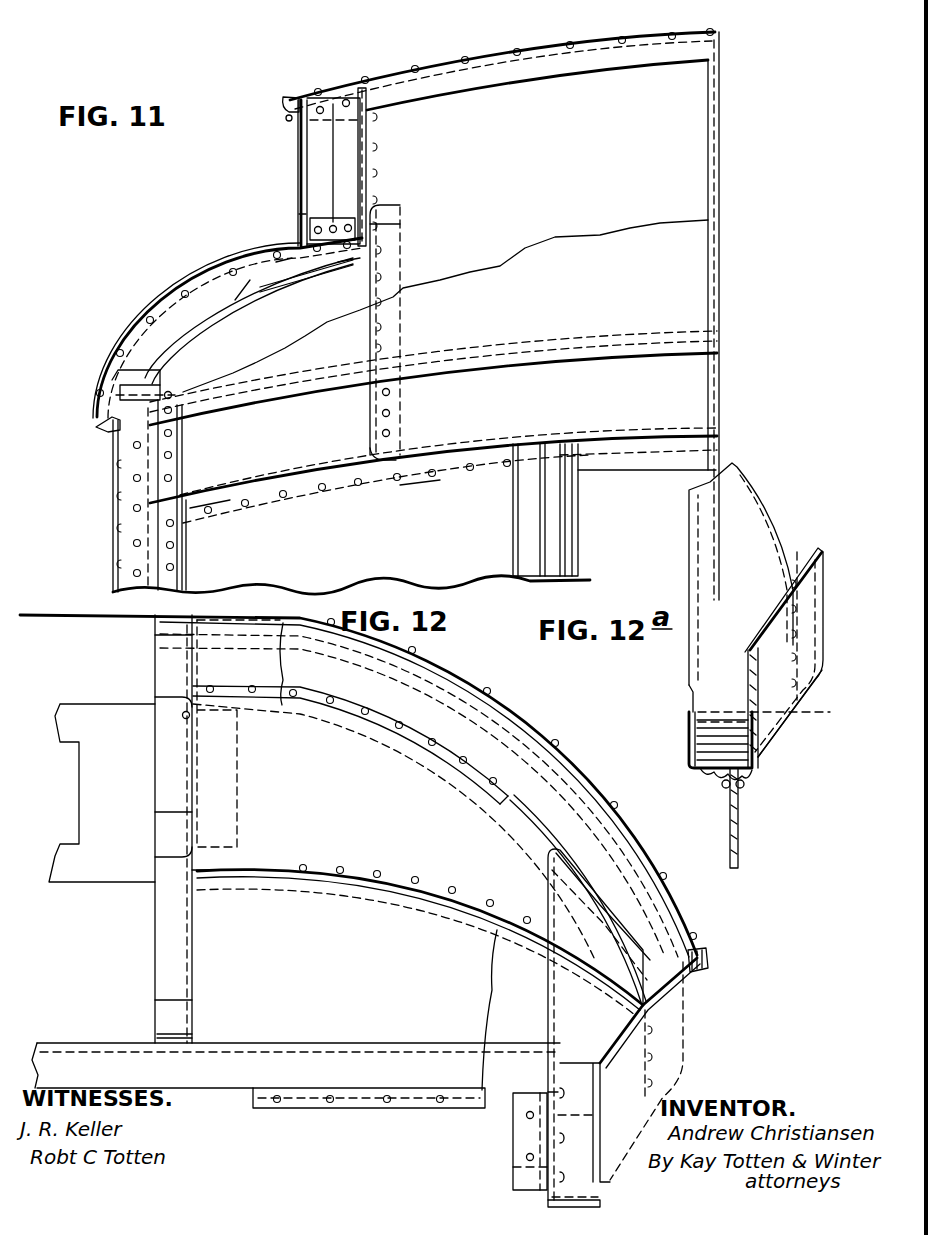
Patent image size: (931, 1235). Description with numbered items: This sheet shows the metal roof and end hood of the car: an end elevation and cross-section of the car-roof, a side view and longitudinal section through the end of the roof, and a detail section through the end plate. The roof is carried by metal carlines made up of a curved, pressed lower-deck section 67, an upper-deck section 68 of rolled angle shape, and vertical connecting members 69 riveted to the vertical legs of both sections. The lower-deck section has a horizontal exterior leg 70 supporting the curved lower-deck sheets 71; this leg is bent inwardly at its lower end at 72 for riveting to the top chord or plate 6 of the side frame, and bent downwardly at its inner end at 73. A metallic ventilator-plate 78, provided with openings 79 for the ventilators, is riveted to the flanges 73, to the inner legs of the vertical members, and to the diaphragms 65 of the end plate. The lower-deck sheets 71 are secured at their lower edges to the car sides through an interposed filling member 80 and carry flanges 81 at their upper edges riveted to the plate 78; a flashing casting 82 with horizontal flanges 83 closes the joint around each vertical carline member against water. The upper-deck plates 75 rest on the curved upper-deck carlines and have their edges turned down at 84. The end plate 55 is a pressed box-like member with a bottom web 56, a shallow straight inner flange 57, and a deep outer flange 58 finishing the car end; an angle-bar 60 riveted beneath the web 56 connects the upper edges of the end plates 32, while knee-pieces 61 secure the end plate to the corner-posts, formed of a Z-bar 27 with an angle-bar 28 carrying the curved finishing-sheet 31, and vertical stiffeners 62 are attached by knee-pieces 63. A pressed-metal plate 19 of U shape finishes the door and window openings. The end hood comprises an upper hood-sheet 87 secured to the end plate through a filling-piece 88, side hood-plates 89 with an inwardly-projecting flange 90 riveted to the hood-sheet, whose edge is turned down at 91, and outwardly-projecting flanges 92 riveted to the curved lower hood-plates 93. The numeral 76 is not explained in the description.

In FIG. 11, the top chord or plate 6 is at (118, 385).
In FIG. 12, the top chord or plate 6 is at (90, 1056).
In FIG. 11, the pressed-metal plate 19 is at (580, 488).
In FIG. 11, the Z-bar 27 is at (226, 386).
In FIG. 12, the Z-bar 27 is at (570, 1127).
In FIG. 12, the angle-bar 28 is at (520, 1144).
In FIG. 11, the curved metal finishing-sheet 31 is at (125, 486).
In FIG. 11, the end plates 32 is at (351, 524).
In FIG. 12A, the end plates 32 is at (740, 827).
In FIG. 12, the end plate 55 is at (662, 1077).
In FIG. 12A, the end plate 55 is at (760, 742).
In FIG. 12, the bottom web 56 is at (548, 1199).
In FIG. 12A, the bottom web 56 is at (746, 772).
In FIG. 12, the inner flange 57 is at (513, 1167).
In FIG. 12A, the inner flange 57 is at (689, 713).
In FIG. 11, the deep outer flange 58 is at (433, 428).
In FIG. 12, the deep outer flange 58 is at (665, 1013).
In FIG. 12A, the deep outer flange 58 is at (765, 603).
In FIG. 11, the angle-bar 60 is at (425, 488).
In FIG. 12A, the angle-bar 60 is at (722, 780).
In FIG. 11, the knee-pieces 61 is at (184, 462).
In FIG. 11, the vertical stiffeners 62 is at (188, 556).
In FIG. 11, the knee-pieces 63 is at (204, 505).
In FIG. 11, the diaphragms 65 is at (400, 245).
In FIG. 12, the diaphragms 65 is at (627, 914).
In FIG. 12A, the diaphragms 65 is at (741, 587).
In FIG. 11, the lower-deck section 67 is at (243, 290).
In FIG. 12, the lower-deck section 67 is at (160, 952).
In FIG. 11, the upper-deck section 68 is at (527, 70).
In FIG. 12, the upper-deck section 68 is at (160, 658).
In FIG. 11, the vertical connecting members 69 is at (300, 192).
In FIG. 12, the vertical connecting members 69 is at (167, 778).
In FIG. 11, the outer leg 70 is at (207, 287).
In FIG. 11, the lower-deck sheets 71 is at (171, 312).
In FIG. 11, the inwardly bent lower end 72 is at (172, 352).
In FIG. 11, the downwardly bent inner end 73 is at (351, 272).
In FIG. 11, the upper-deck plates 75 is at (493, 58).
In FIG. 12, the upper-deck plates 75 is at (58, 615).
In FIG. 12, the plate line 76 is at (155, 812).
In FIG. 11, the metallic plate 78 is at (366, 193).
In FIG. 12, the metallic plate 78 is at (106, 876).
In FIG. 12, the openings 79 is at (100, 793).
In FIG. 11, the filling member 80 is at (108, 436).
In FIG. 12, the filling member 80 is at (297, 1106).
In FIG. 11, the flanges 81 is at (372, 222).
In FIG. 11, the flashing casting 82 is at (299, 214).
In FIG. 11, the horizontal flanges 83 is at (313, 278).
In FIG. 11, the turned-down edges 84 is at (283, 107).
In FIG. 12, the upper hood-sheet 87 is at (447, 671).
In FIG. 12, the filling-piece 88 is at (698, 972).
In FIG. 11, the side hood-plates 89 is at (297, 160).
In FIG. 12, the side hood-plates 89 is at (266, 718).
In FIG. 12, the inwardly-projecting flange 90 is at (527, 813).
In FIG. 12, the turned-down edge 91 is at (430, 749).
In FIG. 11, the outwardly-projecting flanges 92 is at (276, 260).
In FIG. 12, the outwardly-projecting flanges 92 is at (247, 881).
In FIG. 12, the lower hood-plates 93 is at (415, 1010).